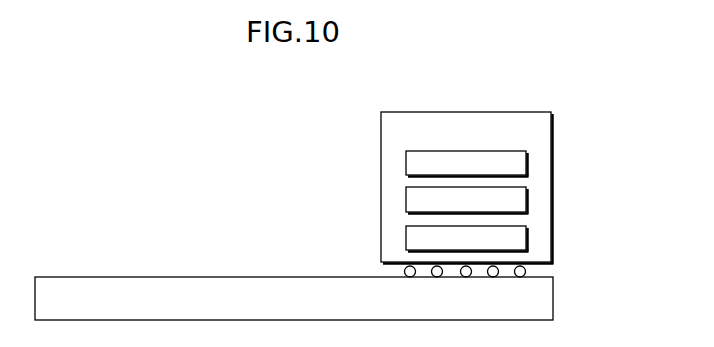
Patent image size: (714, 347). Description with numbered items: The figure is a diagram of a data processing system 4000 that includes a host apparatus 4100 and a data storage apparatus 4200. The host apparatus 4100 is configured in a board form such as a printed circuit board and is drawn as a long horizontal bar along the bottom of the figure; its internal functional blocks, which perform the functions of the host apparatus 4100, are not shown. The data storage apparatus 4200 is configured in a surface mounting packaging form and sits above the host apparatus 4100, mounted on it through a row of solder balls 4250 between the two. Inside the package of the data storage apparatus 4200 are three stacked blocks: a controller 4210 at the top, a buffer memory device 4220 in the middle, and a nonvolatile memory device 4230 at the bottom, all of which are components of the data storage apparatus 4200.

The data processing system 4000 is at (104, 89).
The host apparatus 4100 is at (294, 298).
The data storage apparatus 4200 is at (467, 188).
The controller 4210 is at (467, 164).
The buffer memory device 4220 is at (467, 200).
The nonvolatile memory device 4230 is at (467, 239).
The solder ball 4250 is at (535, 272).